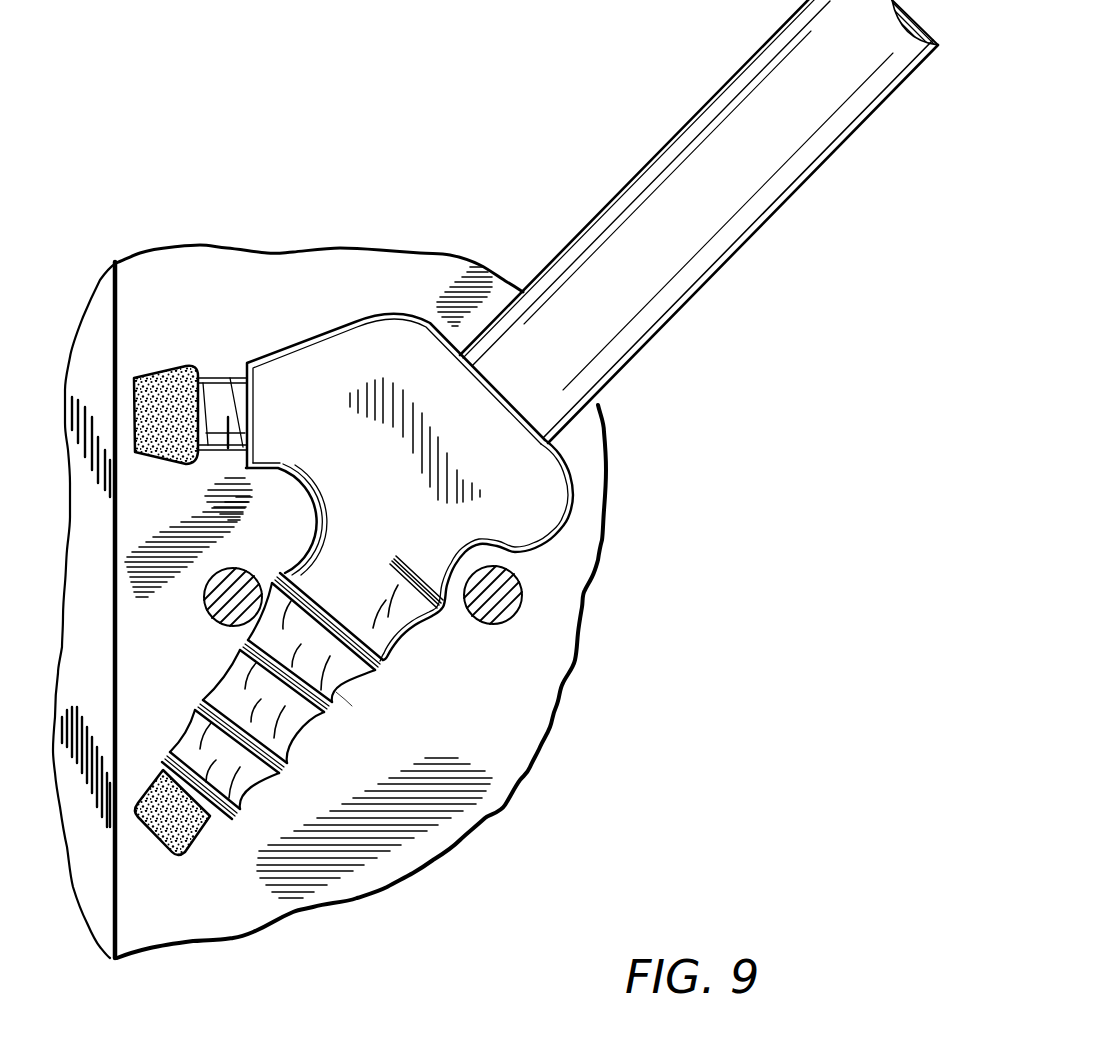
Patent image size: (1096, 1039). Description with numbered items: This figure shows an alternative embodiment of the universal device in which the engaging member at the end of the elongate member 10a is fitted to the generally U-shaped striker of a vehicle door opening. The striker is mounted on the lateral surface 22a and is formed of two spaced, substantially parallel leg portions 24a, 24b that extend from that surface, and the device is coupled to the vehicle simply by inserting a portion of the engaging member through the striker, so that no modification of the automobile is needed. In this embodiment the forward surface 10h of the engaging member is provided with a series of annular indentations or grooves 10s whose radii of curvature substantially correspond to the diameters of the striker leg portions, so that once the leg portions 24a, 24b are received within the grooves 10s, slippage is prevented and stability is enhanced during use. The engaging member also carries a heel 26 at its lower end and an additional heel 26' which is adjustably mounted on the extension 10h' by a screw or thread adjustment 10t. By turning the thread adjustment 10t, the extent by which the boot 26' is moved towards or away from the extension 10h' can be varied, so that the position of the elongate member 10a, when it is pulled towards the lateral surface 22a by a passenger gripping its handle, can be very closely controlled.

The elongate member 10a is at (738, 236).
The forward surface 10h is at (330, 743).
The extension 10h' is at (409, 431).
The annular indentations or grooves 10s is at (357, 680).
The screw or thread adjustment 10t is at (220, 397).
The lateral surface 22a is at (120, 910).
The leg portion 24a is at (491, 610).
The leg portion 24b is at (216, 619).
The heel 26 is at (176, 843).
The heel 26' is at (166, 384).